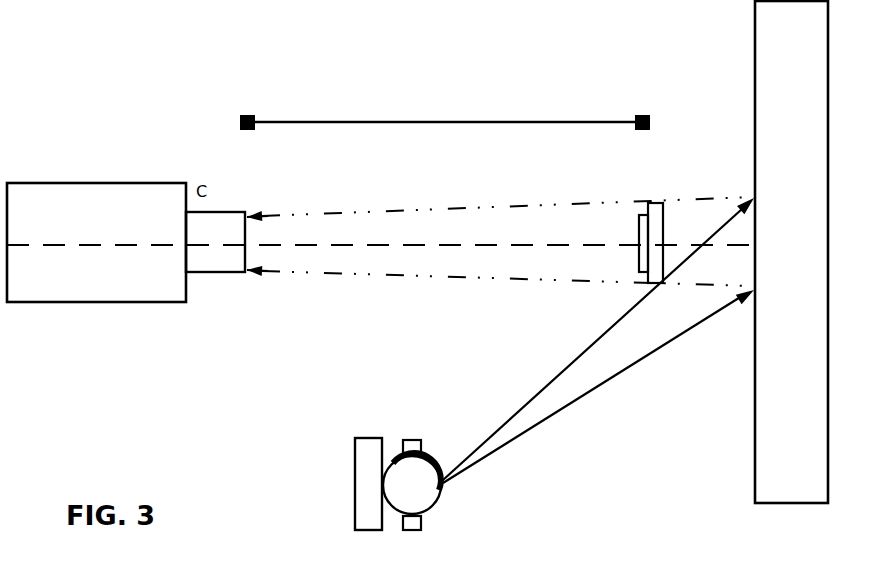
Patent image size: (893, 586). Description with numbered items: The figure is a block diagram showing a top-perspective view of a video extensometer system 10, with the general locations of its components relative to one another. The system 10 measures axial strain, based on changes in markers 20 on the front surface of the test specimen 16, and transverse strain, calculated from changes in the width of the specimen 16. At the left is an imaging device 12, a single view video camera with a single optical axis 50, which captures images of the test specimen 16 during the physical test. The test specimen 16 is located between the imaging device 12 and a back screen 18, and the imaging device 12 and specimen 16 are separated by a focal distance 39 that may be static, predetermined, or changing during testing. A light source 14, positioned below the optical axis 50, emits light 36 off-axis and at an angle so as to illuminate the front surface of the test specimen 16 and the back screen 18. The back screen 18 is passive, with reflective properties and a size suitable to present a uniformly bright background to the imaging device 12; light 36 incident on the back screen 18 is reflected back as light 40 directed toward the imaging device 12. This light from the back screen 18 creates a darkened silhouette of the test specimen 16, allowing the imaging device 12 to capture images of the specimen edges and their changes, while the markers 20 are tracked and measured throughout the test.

The video extensometer system 10 is at (210, 38).
The imaging device 12 is at (128, 183).
The light source 14 is at (357, 440).
The test specimen 16 is at (663, 222).
The back screen 18 is at (791, 252).
The markers 20 is at (639, 220).
The light 36 is at (486, 480).
The focal distance 39 is at (593, 121).
The reflected light 40 is at (322, 200).
The optical axis 50 is at (130, 247).